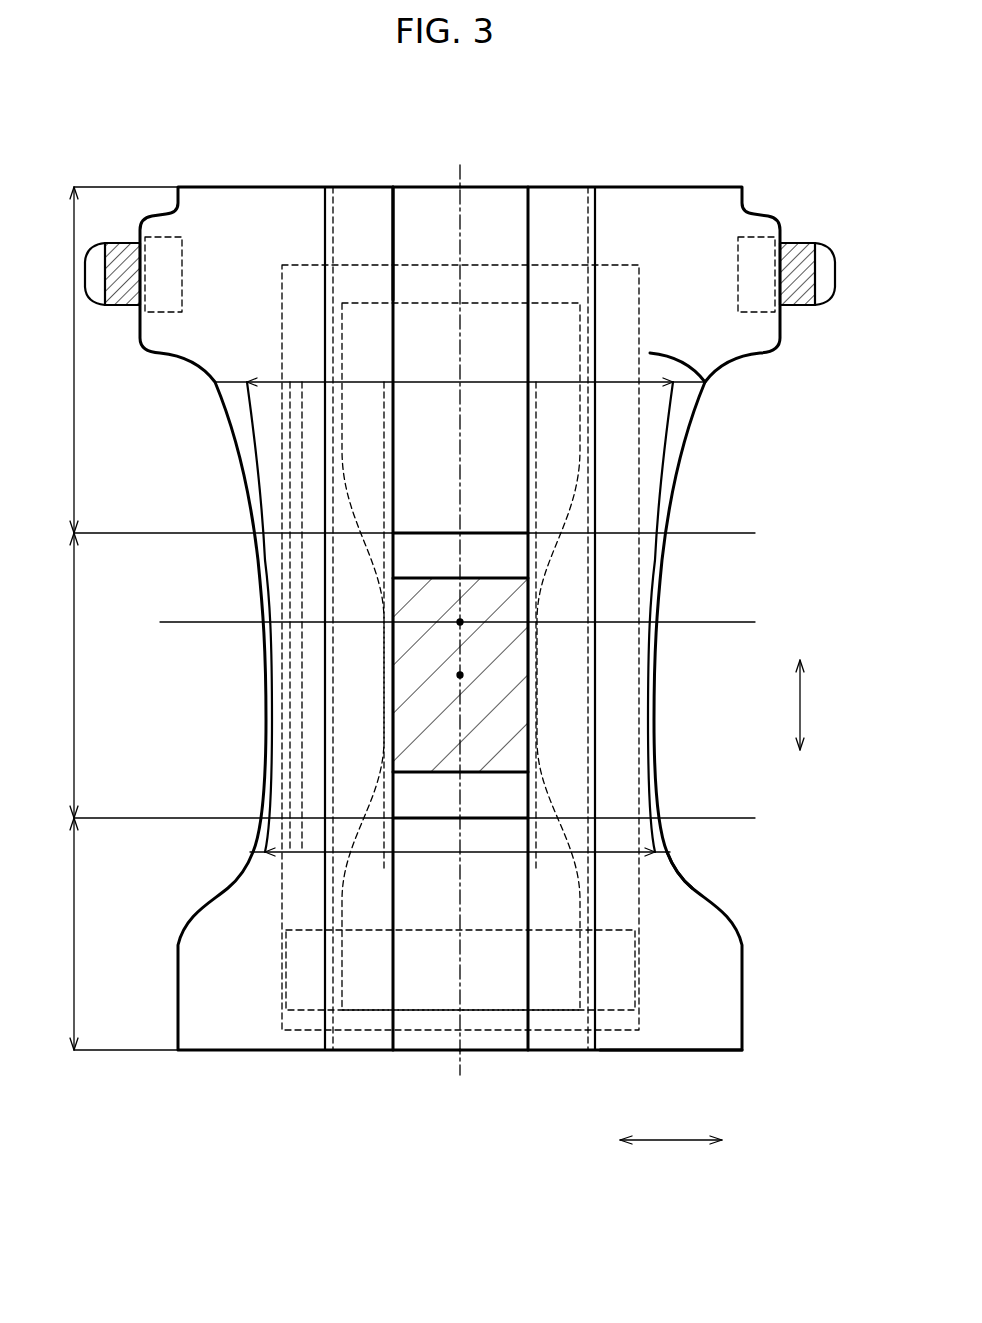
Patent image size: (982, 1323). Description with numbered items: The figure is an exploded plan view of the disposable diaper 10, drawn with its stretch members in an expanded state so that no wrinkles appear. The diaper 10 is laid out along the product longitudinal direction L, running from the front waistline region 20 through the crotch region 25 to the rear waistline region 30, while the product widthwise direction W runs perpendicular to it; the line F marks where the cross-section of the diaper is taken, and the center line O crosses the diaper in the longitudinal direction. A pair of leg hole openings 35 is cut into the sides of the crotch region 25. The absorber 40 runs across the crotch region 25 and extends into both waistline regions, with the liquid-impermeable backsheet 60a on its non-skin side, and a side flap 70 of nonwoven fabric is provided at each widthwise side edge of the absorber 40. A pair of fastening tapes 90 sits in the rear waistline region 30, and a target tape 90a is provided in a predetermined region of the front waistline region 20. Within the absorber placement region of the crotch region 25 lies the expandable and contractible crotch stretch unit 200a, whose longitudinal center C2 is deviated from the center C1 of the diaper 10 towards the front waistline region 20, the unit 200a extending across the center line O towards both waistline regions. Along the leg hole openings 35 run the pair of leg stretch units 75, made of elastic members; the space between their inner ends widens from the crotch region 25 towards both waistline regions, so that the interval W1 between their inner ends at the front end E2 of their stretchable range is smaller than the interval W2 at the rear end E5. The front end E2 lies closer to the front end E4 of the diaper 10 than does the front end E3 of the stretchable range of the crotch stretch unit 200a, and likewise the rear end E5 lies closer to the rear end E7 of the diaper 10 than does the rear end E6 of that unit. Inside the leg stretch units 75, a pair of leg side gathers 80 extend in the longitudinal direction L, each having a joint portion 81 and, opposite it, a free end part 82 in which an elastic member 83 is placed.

The disposable diaper 10 is at (265, 148).
The front waistline region 20 is at (109, 934).
The crotch region 25 is at (397, 675).
The rear waistline region 30 is at (109, 360).
The leg hole openings 35 is at (208, 455).
The absorber 40 is at (557, 330).
The backsheet 60a is at (305, 285).
The side flap 70 is at (710, 212).
The leg stretch units 75 is at (662, 838).
The leg side gathers 80 is at (553, 988).
The joint portion 81 is at (588, 1045).
The free end part 82 is at (527, 982).
The elastic member 83 is at (536, 436).
The fastening tapes 90 is at (812, 247).
The target tape 90a is at (367, 990).
The crotch stretch unit 200a is at (415, 680).
The center of the disposable diaper C1 is at (460, 622).
The center of the crotch stretch unit C2 is at (460, 675).
The end at the front waistline region side of the stretchable range in the leg stret E2 is at (665, 862).
The end at the front waistline region side of the stretchable range in the crotch st E3 is at (497, 772).
The end at the front waistline region side of the disposable diaper E4 is at (697, 1052).
The end at the rear waistline region side of the stretchable range in the leg stretc E5 is at (700, 372).
The end at the rear waistline region side of the stretchable range in the crotch str E6 is at (497, 578).
The end at the rear waistline region side of the disposable diaper E7 is at (410, 187).
The line F- F is at (457, 617).
The center line O is at (446, 623).
The product longitudinal direction L is at (809, 705).
The product widthwise direction W is at (671, 1125).
The interval W1 is at (460, 861).
The interval W2 is at (460, 367).